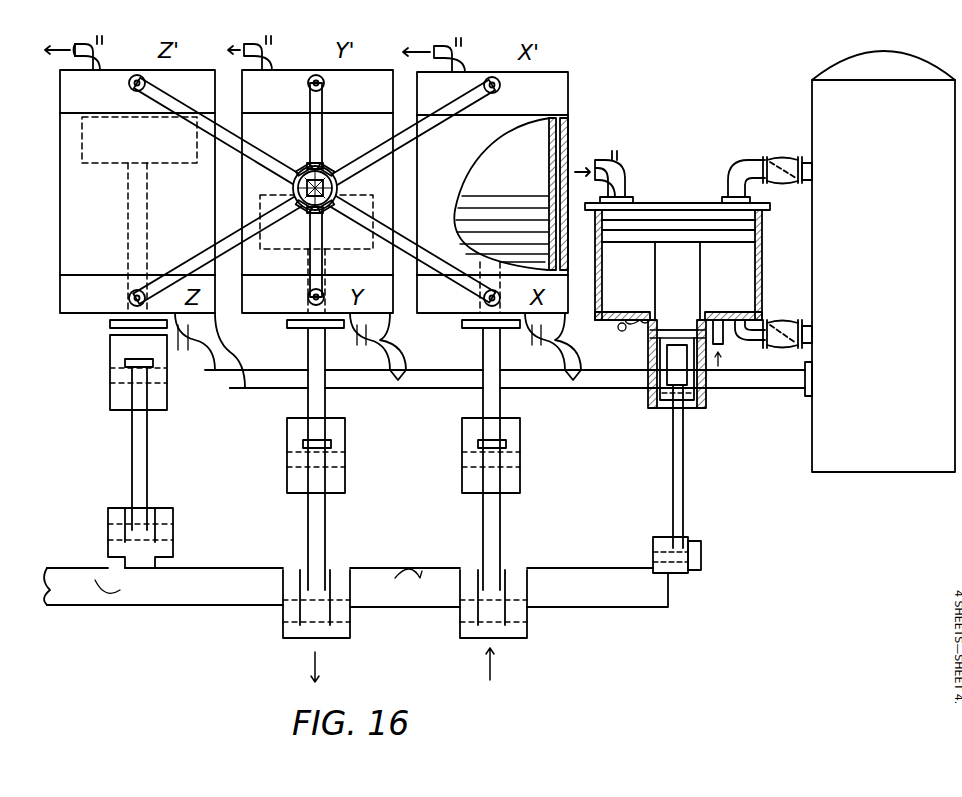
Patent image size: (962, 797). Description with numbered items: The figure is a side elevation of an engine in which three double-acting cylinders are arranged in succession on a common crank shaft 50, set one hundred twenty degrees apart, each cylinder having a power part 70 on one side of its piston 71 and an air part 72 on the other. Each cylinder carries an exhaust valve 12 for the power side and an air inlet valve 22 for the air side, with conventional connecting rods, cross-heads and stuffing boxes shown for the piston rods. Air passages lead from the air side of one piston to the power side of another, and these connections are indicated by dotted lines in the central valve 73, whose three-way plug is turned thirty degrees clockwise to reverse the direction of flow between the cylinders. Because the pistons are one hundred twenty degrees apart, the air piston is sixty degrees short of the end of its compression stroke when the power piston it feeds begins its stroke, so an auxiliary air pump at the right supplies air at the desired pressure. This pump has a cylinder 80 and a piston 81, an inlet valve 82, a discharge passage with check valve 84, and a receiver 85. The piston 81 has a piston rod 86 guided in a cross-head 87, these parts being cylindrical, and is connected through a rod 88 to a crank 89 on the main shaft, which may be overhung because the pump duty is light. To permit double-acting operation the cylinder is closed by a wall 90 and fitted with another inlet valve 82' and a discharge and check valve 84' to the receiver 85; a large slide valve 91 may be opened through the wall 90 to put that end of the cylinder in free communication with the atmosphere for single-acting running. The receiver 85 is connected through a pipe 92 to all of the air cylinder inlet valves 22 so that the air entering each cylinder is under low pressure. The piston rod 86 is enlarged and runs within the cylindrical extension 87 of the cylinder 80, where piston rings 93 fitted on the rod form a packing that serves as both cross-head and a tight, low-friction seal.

The exhaust valve 12 is at (272, 58).
The air inlet valve 22 is at (360, 330).
The crank shaft 50 is at (76, 558).
The power part of cylinder 70 is at (511, 194).
The piston 71 is at (82, 140).
The air part of cylinder 72 is at (522, 262).
The central valve 73 is at (322, 178).
The air pump cylinder 80 is at (758, 268).
The air pump piston 81 is at (745, 236).
The inlet valve 82 is at (613, 173).
The second inlet valve 82' is at (731, 376).
The check valve 84 is at (767, 167).
The second check valve 84' is at (791, 321).
The receiver 85 is at (883, 261).
The piston rod 86 is at (677, 290).
The cross-head 87 is at (650, 402).
The rod 88 is at (672, 447).
The crank 89 is at (653, 554).
The cylinder closure wall 90 is at (648, 318).
The slide valve 91 is at (618, 330).
The pipe 92 is at (450, 388).
The piston rings 93 is at (657, 333).